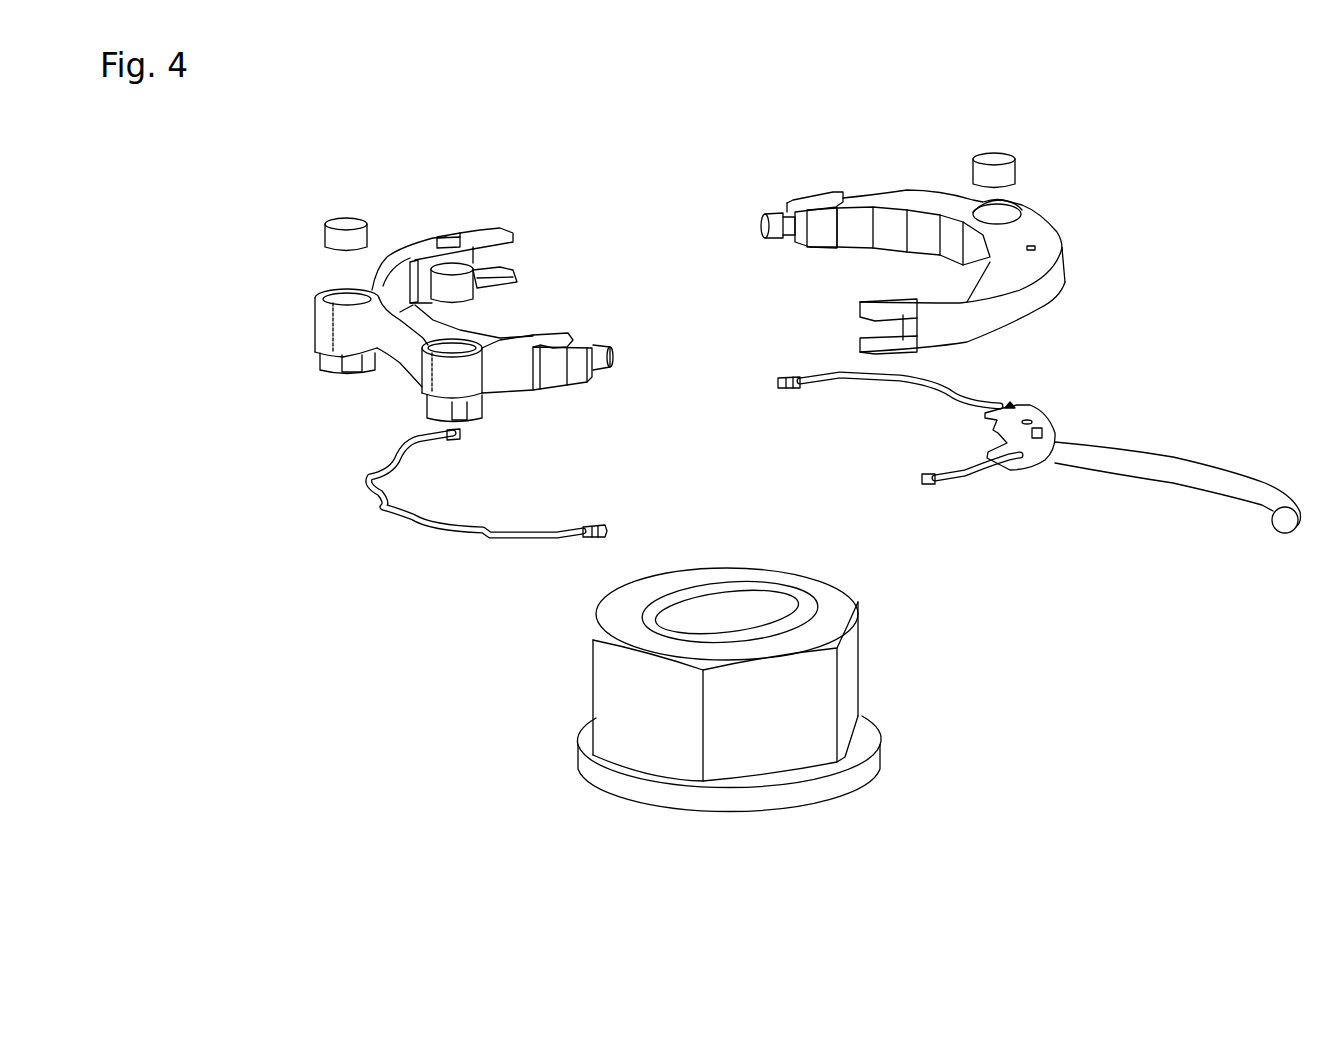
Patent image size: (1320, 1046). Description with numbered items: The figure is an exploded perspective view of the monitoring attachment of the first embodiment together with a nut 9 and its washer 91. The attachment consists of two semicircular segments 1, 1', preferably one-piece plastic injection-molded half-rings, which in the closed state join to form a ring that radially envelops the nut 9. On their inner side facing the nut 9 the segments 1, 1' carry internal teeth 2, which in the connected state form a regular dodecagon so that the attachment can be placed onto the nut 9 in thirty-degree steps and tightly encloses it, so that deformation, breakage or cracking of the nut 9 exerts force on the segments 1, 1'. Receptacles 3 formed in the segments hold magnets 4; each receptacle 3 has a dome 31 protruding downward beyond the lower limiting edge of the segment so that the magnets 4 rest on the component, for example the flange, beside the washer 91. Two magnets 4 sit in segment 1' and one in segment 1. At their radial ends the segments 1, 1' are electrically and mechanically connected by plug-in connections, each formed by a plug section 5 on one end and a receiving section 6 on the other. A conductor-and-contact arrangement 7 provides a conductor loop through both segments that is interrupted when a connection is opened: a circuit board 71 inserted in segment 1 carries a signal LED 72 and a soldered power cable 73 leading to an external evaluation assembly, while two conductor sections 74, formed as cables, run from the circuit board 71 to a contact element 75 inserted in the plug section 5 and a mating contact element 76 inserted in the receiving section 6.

The semicircular segment 1 is at (967, 247).
The semicircular segment 1' is at (424, 264).
The internal teeth 2 is at (415, 305).
The receptacle for magnet 3 is at (338, 304).
The dome 31 is at (322, 361).
The magnet 4 is at (340, 222).
The plug section 5 is at (603, 390).
The receiving section 6 is at (488, 203).
The conductor-and-contact arrangement 7 is at (829, 522).
The circuit board 71 is at (1040, 421).
The signal light-emitting diode 72 is at (1052, 445).
The power cable 73 is at (1218, 478).
The conductor section 74 is at (408, 519).
The contact element 75 is at (592, 523).
The mating contact element 76 is at (447, 445).
The nut 9 is at (845, 672).
The washer 91 is at (606, 782).